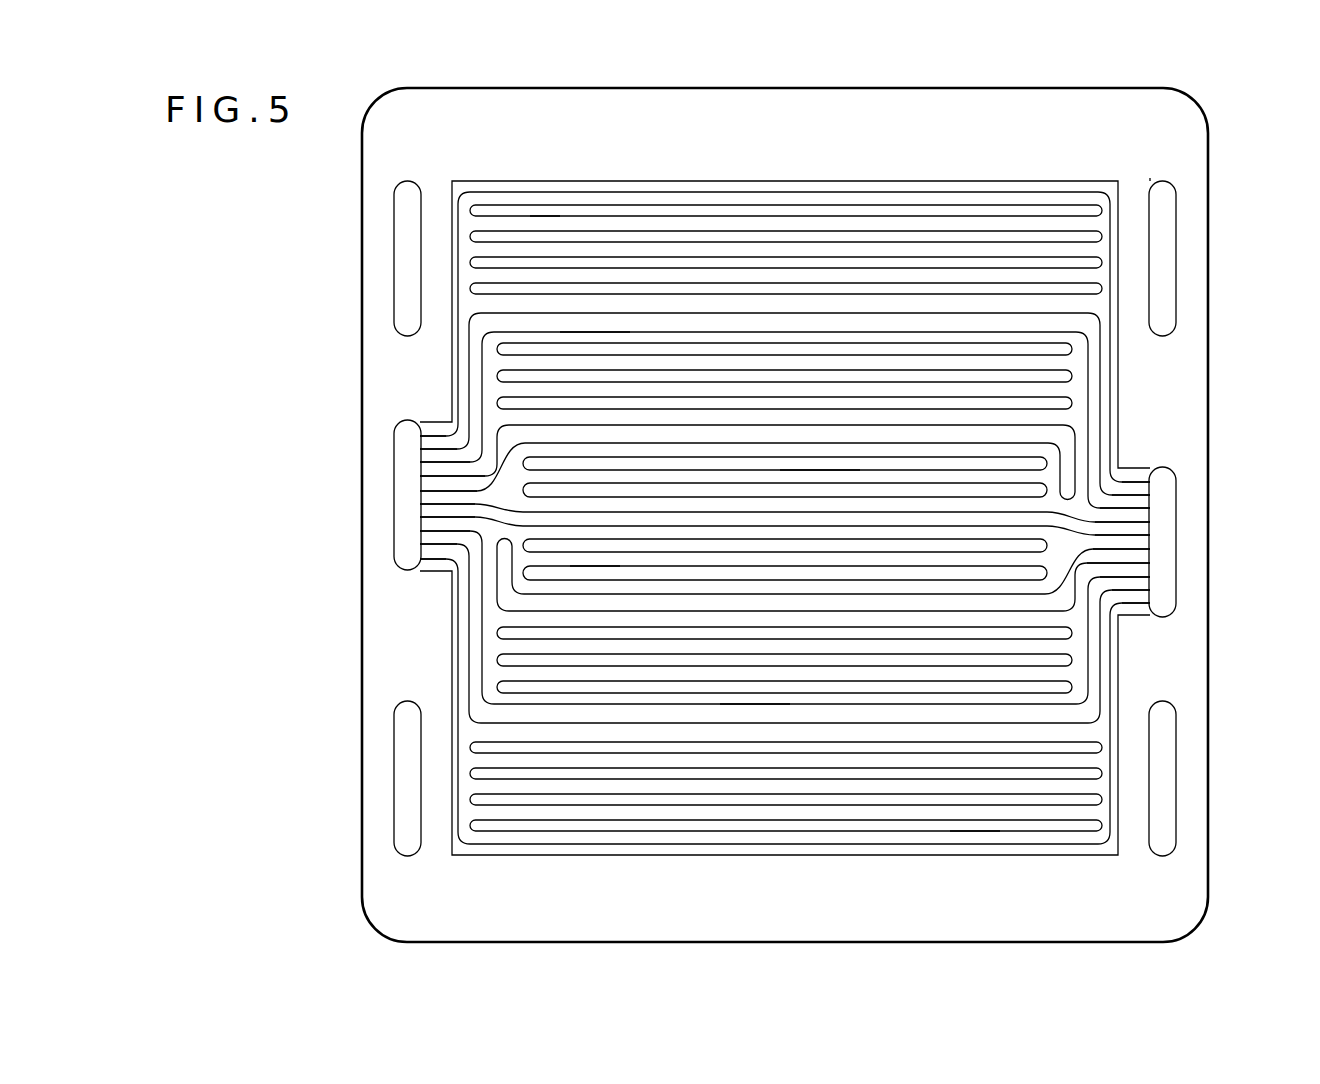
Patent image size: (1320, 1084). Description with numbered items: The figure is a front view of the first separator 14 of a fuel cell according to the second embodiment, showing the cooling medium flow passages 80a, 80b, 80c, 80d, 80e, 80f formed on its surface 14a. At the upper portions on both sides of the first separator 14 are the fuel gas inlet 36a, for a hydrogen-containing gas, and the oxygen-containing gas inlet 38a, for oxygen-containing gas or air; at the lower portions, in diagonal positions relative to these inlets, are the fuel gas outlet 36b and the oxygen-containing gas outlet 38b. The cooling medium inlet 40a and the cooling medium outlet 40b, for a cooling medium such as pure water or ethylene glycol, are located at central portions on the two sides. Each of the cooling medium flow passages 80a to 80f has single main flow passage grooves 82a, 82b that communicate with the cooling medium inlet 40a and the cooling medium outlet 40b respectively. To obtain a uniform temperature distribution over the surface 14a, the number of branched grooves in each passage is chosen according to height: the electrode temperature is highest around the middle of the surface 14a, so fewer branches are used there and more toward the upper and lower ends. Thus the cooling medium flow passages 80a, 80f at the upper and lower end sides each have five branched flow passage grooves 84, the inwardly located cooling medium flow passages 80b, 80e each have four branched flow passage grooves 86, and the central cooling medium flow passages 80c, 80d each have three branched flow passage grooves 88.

The first separator 14 is at (1220, 138).
The surface 14a is at (1200, 171).
The fuel gas inlet 36a is at (1172, 232).
The fuel gas outlet 36b is at (397, 764).
The oxygen-containing gas inlet 38a is at (397, 252).
The oxygen-containing gas outlet 38b is at (1172, 735).
The cooling medium inlet 40a is at (404, 434).
The cooling medium outlet 40b is at (1166, 491).
The cooling medium flow passage 80a is at (672, 176).
The cooling medium flow passage 80b is at (732, 322).
The cooling medium flow passage 80c is at (889, 432).
The cooling medium flow passage 80d is at (555, 602).
The cooling medium flow passage 80e is at (655, 712).
The cooling medium flow passage 80f is at (840, 856).
The main flow passage groove 82a is at (492, 432).
The main flow passage groove 82b is at (1085, 440).
The branched flow passage grooves 84 is at (540, 228).
The branched flow passage grooves 86 is at (617, 363).
The branched flow passage grooves 88 is at (790, 455).